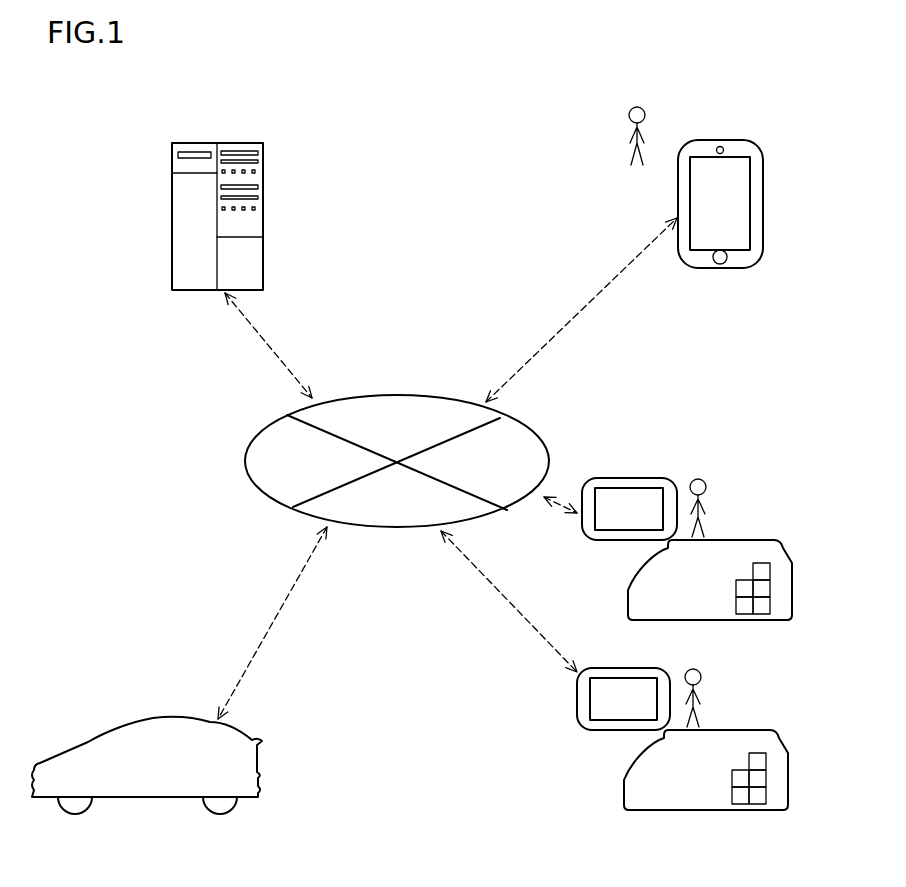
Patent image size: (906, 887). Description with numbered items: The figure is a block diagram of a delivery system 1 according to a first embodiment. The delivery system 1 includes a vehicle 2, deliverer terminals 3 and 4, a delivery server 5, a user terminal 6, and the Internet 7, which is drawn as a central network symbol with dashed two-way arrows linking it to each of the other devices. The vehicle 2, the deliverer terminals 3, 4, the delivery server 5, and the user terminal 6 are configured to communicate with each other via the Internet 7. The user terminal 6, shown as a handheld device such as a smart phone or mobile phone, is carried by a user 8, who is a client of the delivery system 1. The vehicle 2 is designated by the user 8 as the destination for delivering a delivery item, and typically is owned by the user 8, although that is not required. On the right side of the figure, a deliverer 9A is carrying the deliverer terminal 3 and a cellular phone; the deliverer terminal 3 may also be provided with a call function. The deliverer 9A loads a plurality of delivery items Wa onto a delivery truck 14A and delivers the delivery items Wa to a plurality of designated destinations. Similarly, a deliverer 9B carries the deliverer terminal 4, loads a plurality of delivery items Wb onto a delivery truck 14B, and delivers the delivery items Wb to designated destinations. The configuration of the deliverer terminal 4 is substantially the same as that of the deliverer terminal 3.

The delivery system 1 is at (487, 87).
The vehicle 2 is at (156, 728).
The deliverer terminal 3 is at (633, 475).
The deliverer terminal 4 is at (626, 665).
The delivery server 5 is at (243, 143).
The user terminal 6 is at (718, 138).
The Internet 7 is at (399, 395).
The user 8 is at (638, 105).
The deliverer 9A is at (698, 477).
The deliverer 9B is at (694, 667).
The delivery truck 14A is at (733, 547).
The delivery truck 14B is at (728, 737).
The delivery items Wa is at (760, 607).
The delivery items Wb is at (755, 800).